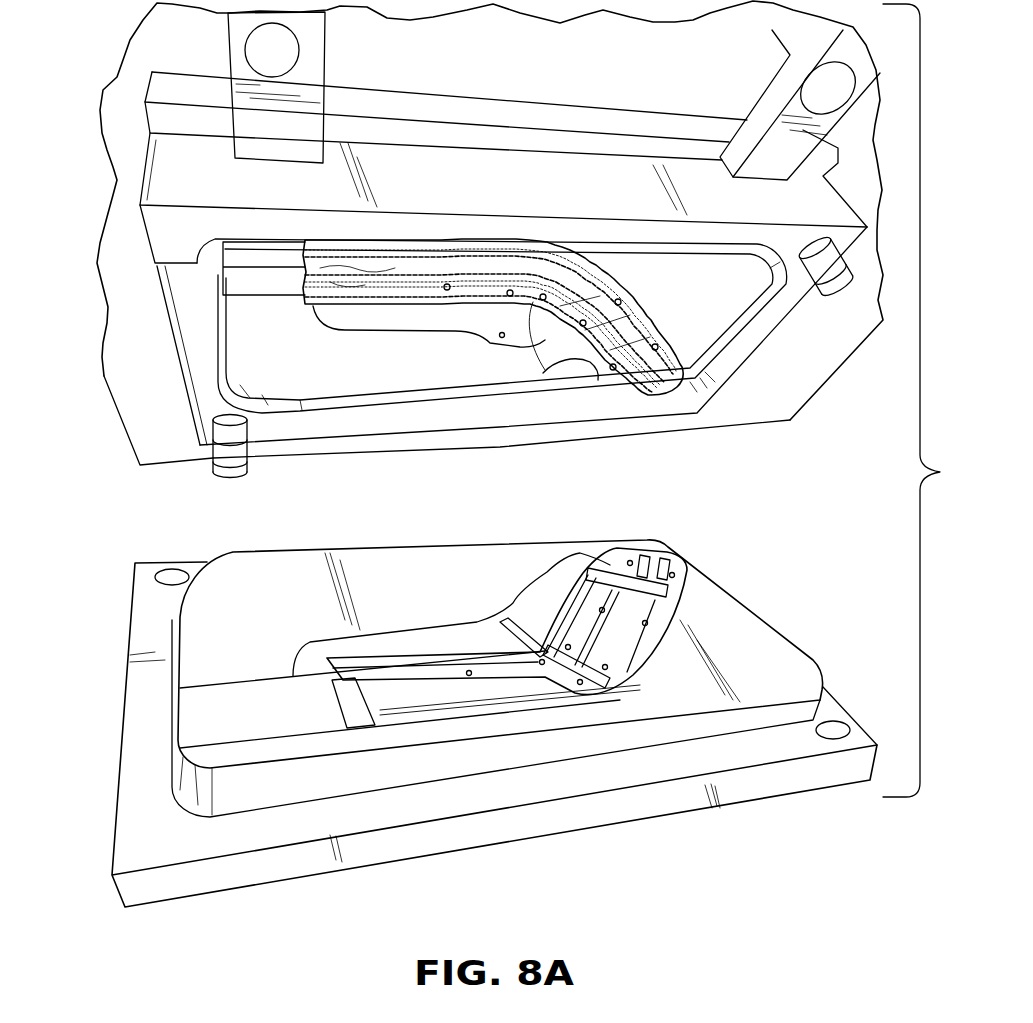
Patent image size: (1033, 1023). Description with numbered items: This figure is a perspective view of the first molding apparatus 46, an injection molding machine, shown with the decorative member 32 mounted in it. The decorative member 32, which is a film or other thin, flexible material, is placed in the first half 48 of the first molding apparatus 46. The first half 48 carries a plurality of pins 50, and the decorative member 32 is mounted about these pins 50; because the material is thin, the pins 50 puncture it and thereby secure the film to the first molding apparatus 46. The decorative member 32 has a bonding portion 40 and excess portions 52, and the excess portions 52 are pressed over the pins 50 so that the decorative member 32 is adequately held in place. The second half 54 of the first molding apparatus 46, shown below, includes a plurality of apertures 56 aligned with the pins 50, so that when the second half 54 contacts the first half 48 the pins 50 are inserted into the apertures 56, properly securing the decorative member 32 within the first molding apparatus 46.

The decorative member 32 is at (640, 324).
The bonding portion 40 is at (458, 272).
The first molding apparatus 46 is at (116, 480).
The first half 48 is at (197, 362).
The pins 50 is at (585, 338).
The excess portions 52 is at (567, 270).
The second half 54 is at (205, 612).
The apertures 56 is at (673, 571).